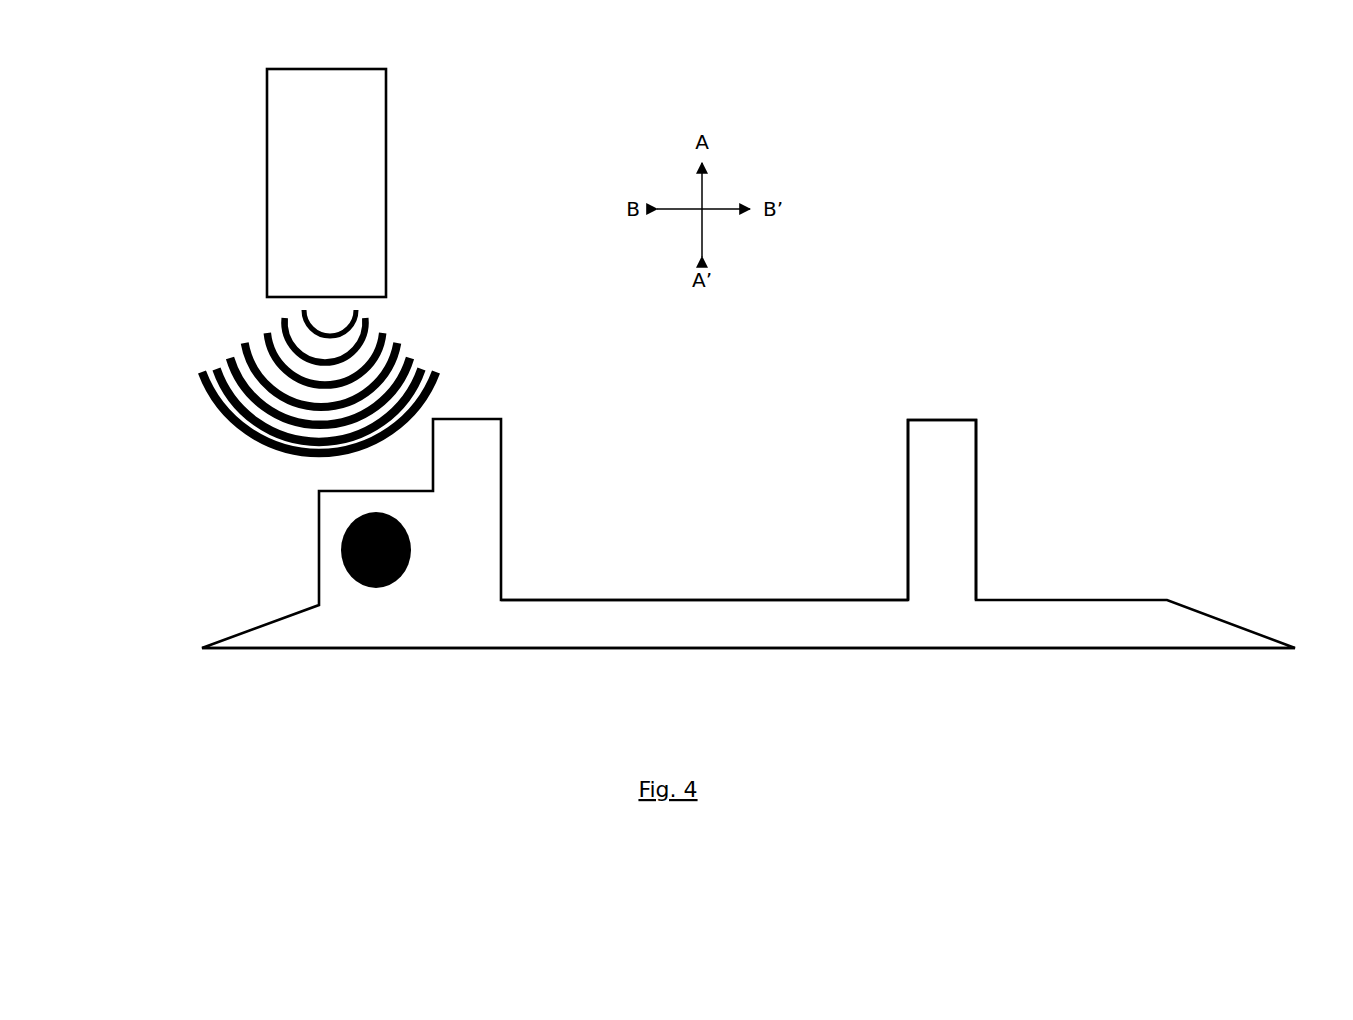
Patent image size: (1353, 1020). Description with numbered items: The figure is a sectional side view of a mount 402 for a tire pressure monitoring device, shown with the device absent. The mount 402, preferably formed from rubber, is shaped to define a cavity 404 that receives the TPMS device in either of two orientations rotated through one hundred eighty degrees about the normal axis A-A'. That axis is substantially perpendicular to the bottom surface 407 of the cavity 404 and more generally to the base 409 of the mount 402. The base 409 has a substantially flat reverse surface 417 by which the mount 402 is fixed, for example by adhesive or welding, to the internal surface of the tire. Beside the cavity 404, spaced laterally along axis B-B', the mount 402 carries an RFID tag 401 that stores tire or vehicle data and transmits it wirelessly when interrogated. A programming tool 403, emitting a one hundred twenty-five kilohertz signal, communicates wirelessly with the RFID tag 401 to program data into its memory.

The RFID tag 401 is at (322, 559).
The mount 402 is at (975, 550).
The programming tool 403 is at (319, 261).
The cavity 404 is at (786, 400).
The bottom surface of the cavity 407 is at (626, 603).
The base 409 is at (775, 628).
The reverse surface 417 is at (566, 648).